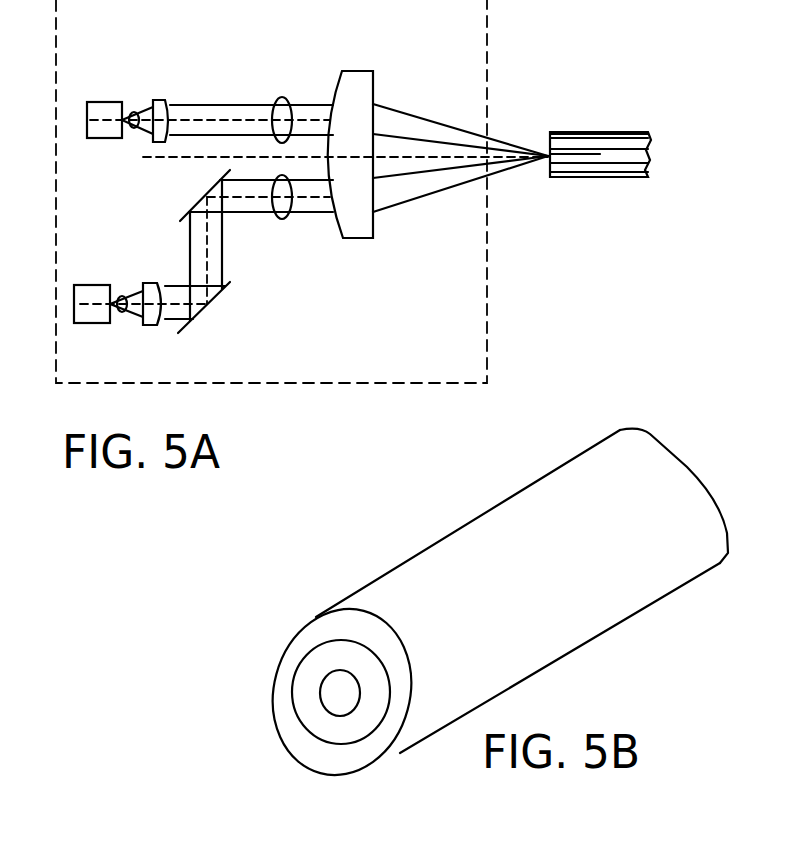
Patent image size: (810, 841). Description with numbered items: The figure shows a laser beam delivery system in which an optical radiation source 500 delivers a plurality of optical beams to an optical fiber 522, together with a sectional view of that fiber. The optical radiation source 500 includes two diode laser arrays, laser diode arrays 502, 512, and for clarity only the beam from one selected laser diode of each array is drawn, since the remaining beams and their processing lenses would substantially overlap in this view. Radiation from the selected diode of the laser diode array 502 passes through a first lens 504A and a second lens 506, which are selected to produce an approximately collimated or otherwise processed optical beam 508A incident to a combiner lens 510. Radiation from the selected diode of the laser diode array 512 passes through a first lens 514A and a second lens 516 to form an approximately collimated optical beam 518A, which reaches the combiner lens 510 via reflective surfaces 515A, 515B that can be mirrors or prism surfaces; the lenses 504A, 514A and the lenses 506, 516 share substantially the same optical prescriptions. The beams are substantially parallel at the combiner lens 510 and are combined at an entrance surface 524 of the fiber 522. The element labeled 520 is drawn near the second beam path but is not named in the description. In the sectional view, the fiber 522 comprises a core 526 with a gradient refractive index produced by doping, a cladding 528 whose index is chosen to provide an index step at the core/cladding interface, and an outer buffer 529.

In FIG. 5A, the optical radiation source 500 is at (487, 33).
In FIG. 5A, the laser diode array 502 is at (103, 102).
In FIG. 5A, the first lens 504A is at (147, 110).
In FIG. 5A, the second lens 506 is at (161, 100).
In FIG. 5A, the optical beam 508A is at (282, 97).
In FIG. 5A, the combiner lens 510 is at (357, 71).
In FIG. 5A, the laser diode array 512 is at (90, 323).
In FIG. 5A, the first lens 514A is at (135, 114).
In FIG. 5A, the reflective surface 515A is at (202, 310).
In FIG. 5A, the reflective surface 515B is at (212, 192).
In FIG. 5A, the second lens 516 is at (152, 283).
In FIG. 5A, the optical beam 518A is at (285, 221).
In FIG. 5A, the second light beam 520 is at (182, 330).
In FIG. 5A, the optical fiber 522 is at (632, 177).
In FIG. 5A, the entrance surface 524 is at (549, 138).
In FIG. 5B, the core 526 is at (335, 685).
In FIG. 5A, the cladding 528 is at (548, 160).
In FIG. 5B, the cladding 528 is at (312, 665).
In FIG. 5A, the buffer 529 is at (585, 158).
In FIG. 5B, the buffer 529 is at (303, 632).